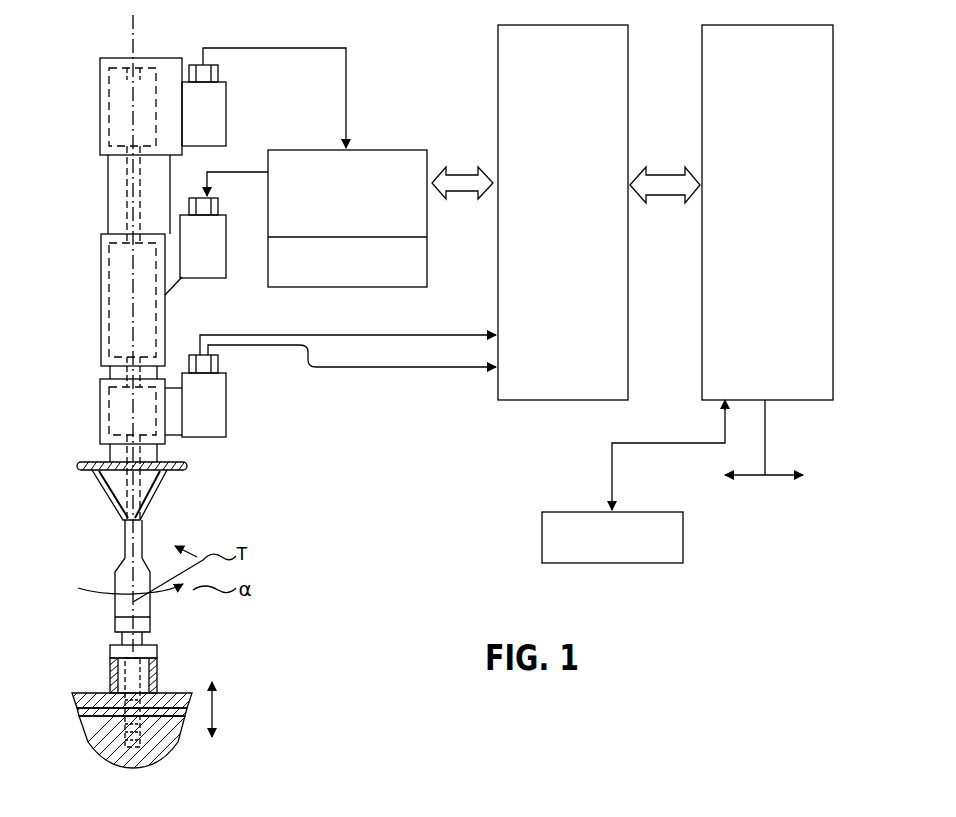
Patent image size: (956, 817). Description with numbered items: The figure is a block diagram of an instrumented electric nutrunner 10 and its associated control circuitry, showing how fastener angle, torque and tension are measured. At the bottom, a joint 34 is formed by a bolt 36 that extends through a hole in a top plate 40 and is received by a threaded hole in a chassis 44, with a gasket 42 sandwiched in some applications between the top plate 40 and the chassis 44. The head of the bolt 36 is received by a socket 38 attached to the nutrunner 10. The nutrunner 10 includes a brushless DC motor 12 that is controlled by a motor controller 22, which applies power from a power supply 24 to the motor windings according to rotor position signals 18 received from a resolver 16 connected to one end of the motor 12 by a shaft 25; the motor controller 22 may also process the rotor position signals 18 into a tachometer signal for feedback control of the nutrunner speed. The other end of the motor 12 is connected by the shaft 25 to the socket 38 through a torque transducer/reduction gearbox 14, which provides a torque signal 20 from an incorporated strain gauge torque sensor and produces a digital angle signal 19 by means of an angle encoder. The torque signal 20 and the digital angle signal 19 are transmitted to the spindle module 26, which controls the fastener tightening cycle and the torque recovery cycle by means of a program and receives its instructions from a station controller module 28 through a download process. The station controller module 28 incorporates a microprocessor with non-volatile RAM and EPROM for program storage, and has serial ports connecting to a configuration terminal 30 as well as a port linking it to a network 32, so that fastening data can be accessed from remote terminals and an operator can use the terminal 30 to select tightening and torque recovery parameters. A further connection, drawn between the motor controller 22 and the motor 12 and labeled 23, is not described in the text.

The instrumented electric nutrunner 10 is at (148, 45).
The brushless DC motor 12 is at (135, 317).
The torque transducer/reduction gearbox 14 is at (110, 405).
The resolver 16 is at (132, 89).
The rotor position signals 18 is at (347, 78).
The digital angle signal 19 is at (396, 367).
The torque signal 20 is at (431, 335).
The motor controller 22 is at (292, 150).
The motor control line 23 is at (226, 172).
The power supply 24 is at (428, 258).
The shaft 25 is at (128, 204).
The spindle module 26 is at (498, 30).
The station controller module 28 is at (702, 33).
The configuration terminal 30 is at (625, 565).
The network 32 is at (776, 474).
The joint 34 is at (178, 765).
The bolt 36 is at (130, 683).
The socket 38 is at (110, 651).
The top plate 40 is at (95, 698).
The gasket 42 is at (80, 710).
The chassis 44 is at (112, 757).